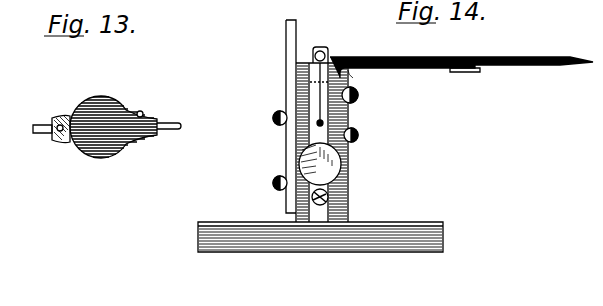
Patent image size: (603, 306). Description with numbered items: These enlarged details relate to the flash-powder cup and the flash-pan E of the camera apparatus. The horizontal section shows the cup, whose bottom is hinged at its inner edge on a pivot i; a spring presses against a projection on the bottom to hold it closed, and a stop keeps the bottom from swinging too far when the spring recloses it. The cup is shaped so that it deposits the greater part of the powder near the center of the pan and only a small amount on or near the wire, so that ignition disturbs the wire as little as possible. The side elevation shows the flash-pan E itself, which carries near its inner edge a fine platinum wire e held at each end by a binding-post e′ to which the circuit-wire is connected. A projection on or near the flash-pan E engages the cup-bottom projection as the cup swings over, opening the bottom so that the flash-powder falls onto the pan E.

In FIG. 13, the pivot i is at (45, 123).
In FIG. 14, the binding-post e′ is at (338, 170).
In FIG. 14, the fine platinum wire e is at (329, 51).
In FIG. 14, the flash-pan E is at (412, 69).